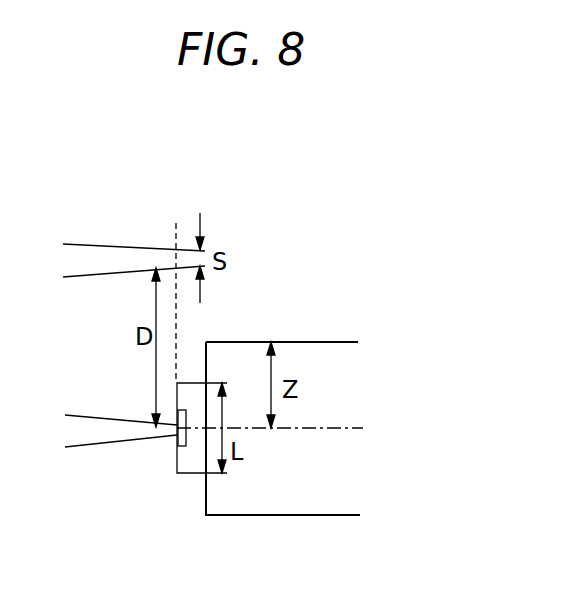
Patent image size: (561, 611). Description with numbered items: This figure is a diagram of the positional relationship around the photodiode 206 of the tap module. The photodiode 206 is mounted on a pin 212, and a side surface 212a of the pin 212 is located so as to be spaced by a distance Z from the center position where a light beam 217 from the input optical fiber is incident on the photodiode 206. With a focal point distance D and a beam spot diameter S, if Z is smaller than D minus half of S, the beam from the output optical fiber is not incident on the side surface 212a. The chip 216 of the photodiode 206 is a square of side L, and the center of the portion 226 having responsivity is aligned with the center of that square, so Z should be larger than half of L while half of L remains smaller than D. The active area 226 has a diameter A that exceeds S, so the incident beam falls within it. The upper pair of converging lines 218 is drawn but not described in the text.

The first nozzle 218 is at (92, 258).
The light beam 217 is at (87, 428).
The pin 212 is at (328, 353).
The side surface of the pin 212a is at (265, 336).
The chip of the photodiode 216 is at (194, 476).
The active area 226 is at (177, 445).
The photodiode 206 is at (194, 511).